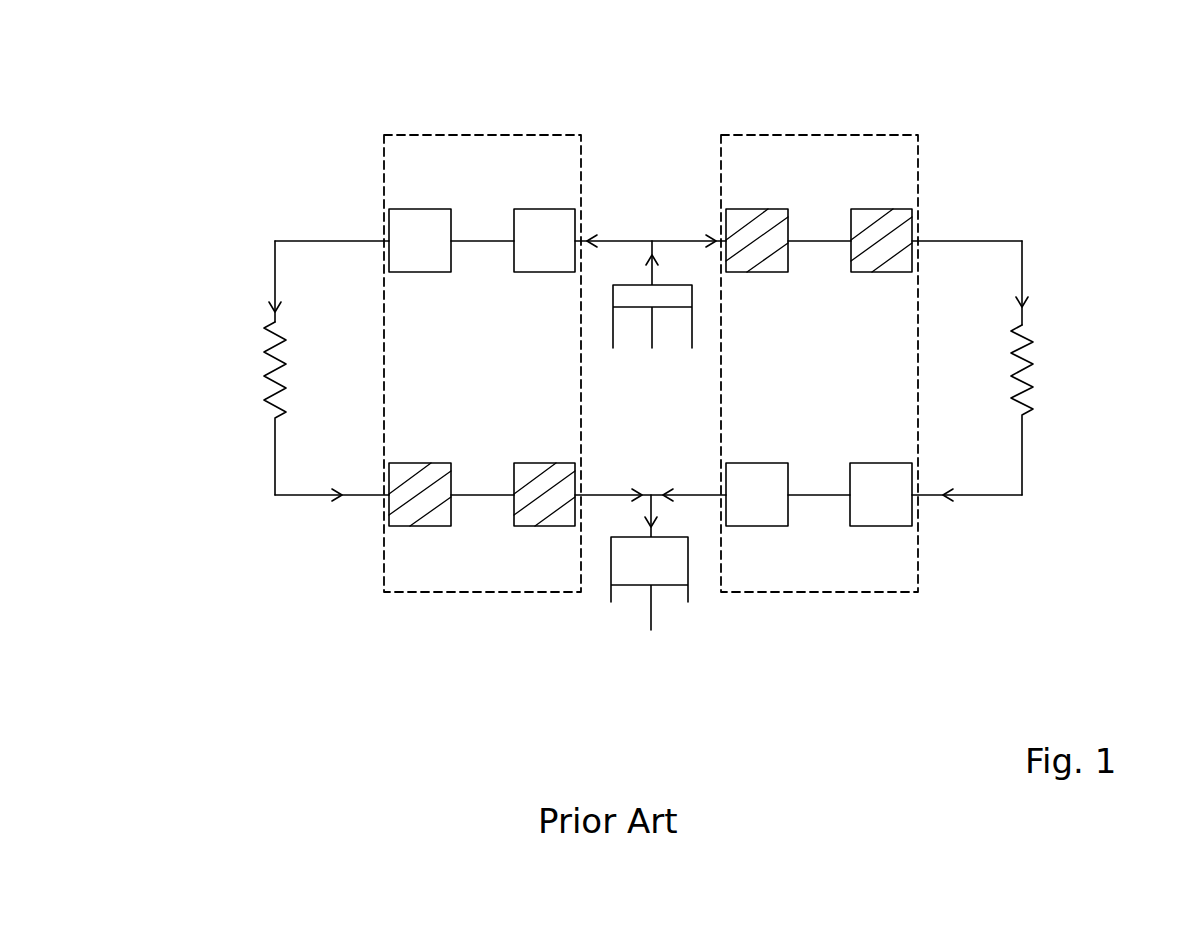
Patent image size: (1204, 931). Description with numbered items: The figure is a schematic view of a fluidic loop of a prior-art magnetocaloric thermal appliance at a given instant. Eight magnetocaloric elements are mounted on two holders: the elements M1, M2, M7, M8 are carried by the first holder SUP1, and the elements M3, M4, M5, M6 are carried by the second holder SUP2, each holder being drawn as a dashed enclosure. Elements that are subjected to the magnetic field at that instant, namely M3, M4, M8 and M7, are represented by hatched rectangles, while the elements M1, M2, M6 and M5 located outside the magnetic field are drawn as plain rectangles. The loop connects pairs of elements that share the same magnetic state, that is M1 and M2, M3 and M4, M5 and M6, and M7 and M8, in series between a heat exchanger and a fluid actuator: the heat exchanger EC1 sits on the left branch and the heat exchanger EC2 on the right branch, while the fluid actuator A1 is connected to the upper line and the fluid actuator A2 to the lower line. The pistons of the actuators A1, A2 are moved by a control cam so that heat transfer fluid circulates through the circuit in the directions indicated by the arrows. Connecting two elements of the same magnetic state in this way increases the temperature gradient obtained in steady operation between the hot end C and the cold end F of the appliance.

The holder SUP1 is at (427, 135).
The holder SUP2 is at (835, 135).
The magnetocaloric element M1 is at (420, 218).
The magnetocaloric element M2 is at (535, 230).
The magnetocaloric element M3 is at (738, 218).
The magnetocaloric element M4 is at (876, 230).
The magnetocaloric element M5 is at (866, 518).
The magnetocaloric element M6 is at (748, 518).
The magnetocaloric element M7 is at (537, 515).
The magnetocaloric element M8 is at (420, 515).
The fluid actuator A1 is at (629, 295).
The fluid actuator A2 is at (667, 578).
The heat exchanger EC1 is at (268, 330).
The heat exchanger EC2 is at (1030, 407).
The cold end F is at (314, 202).
The hot end C is at (1012, 190).